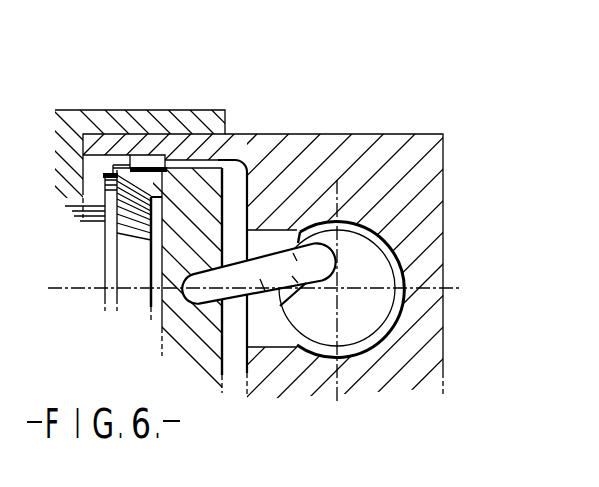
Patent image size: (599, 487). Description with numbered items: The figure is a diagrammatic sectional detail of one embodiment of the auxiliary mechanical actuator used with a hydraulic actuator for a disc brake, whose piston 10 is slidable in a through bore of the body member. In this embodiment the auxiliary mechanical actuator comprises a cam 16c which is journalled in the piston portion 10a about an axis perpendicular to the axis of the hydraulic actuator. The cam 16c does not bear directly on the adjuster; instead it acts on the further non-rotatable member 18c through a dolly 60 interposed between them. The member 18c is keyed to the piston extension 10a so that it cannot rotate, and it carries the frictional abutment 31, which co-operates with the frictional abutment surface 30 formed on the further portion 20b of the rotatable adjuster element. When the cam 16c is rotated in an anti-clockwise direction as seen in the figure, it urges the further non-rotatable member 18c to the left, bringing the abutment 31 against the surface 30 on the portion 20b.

The piston 10 is at (112, 115).
The piston portion 10a is at (292, 157).
The further non-rotatable member 18c is at (192, 187).
The frictional abutment surface 30 is at (100, 226).
The frictional abutment 31 is at (117, 211).
The further portion of the rotatable adjuster element 20b is at (127, 238).
The dolly 60 is at (268, 277).
The cam 16c is at (353, 275).